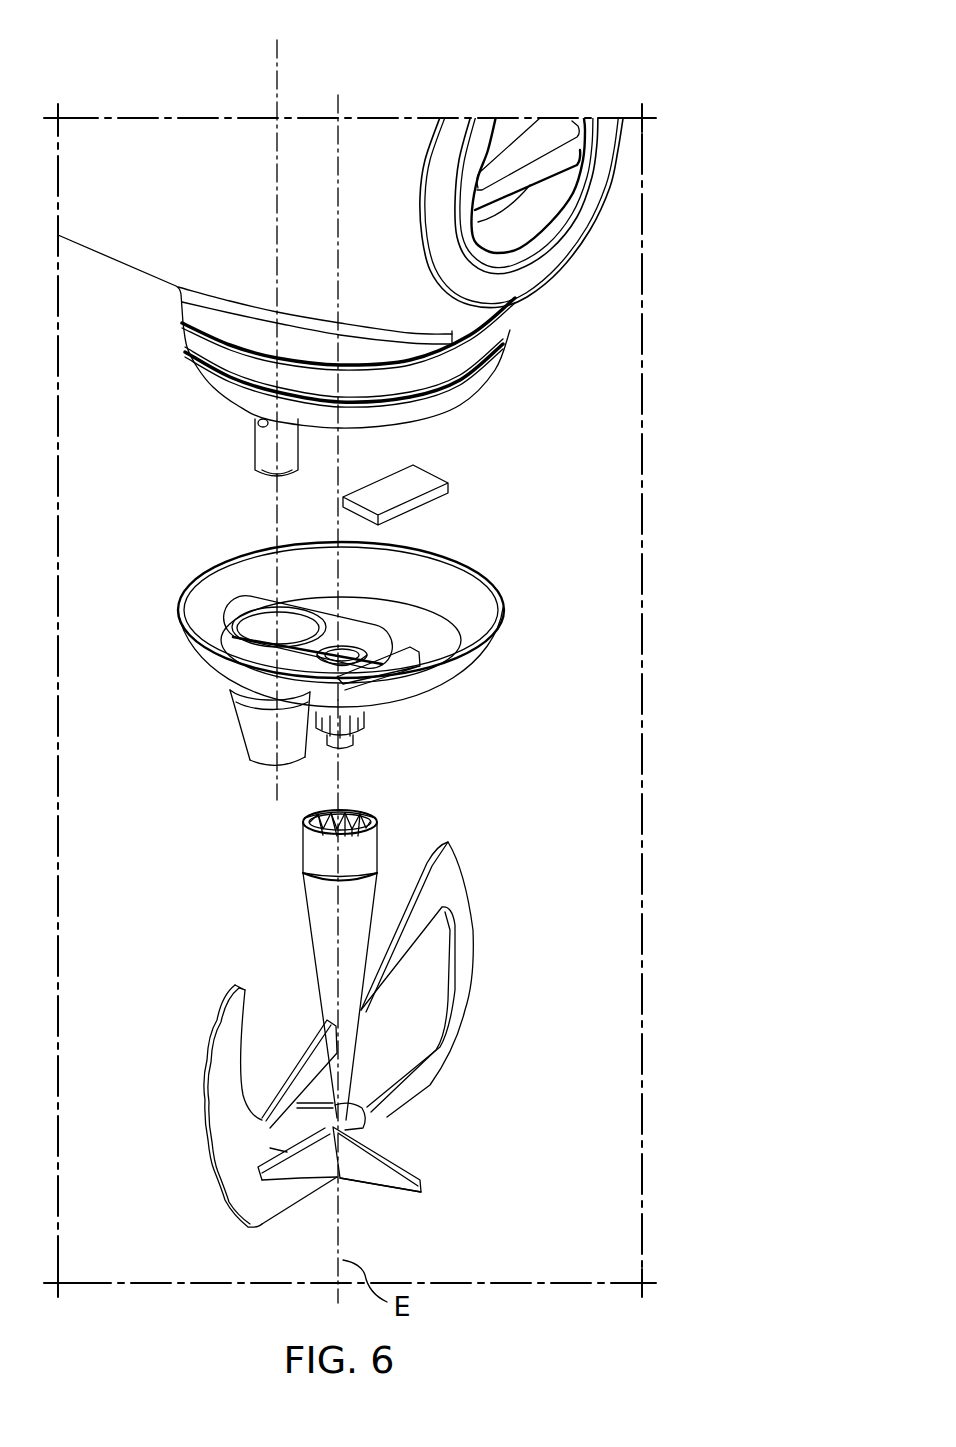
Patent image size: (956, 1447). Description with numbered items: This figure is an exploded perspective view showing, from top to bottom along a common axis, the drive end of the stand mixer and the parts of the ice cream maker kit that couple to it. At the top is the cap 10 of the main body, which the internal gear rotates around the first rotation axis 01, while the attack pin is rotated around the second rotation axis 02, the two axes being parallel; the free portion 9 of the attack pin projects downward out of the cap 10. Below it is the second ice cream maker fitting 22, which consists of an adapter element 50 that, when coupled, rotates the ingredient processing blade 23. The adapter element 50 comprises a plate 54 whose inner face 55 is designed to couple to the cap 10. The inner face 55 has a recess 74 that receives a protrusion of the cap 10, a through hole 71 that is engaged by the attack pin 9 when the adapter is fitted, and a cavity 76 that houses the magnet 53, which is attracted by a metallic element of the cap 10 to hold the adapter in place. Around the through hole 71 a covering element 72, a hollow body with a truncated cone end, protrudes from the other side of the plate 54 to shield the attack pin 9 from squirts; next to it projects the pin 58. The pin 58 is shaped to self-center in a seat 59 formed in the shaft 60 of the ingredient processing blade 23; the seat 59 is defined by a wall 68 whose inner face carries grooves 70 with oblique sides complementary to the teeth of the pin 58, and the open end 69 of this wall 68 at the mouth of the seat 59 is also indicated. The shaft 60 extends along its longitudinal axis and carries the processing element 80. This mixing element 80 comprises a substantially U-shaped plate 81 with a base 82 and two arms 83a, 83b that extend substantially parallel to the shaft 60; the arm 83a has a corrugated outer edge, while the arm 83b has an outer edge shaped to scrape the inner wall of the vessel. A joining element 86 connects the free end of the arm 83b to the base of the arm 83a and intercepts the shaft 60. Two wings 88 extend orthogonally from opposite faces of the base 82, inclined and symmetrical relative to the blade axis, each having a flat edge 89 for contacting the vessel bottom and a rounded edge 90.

The second rotation axis 02 is at (279, 50).
The first rotation axis 01 is at (340, 97).
The cap 10 is at (450, 397).
The free portion of the attack pin 9 is at (258, 446).
The magnet 53 is at (420, 475).
The second ice cream maker fitting 22 is at (423, 629).
The plate 54 is at (503, 633).
The adapter element 50 is at (472, 667).
The inner face 55 is at (401, 627).
The recess 74 is at (288, 603).
The through hole 71 is at (258, 623).
The cavity 76 is at (418, 660).
The covering element 72 is at (258, 720).
The pin 58 is at (382, 743).
The ingredient processing blade 23 is at (415, 937).
The shaft 60 is at (323, 867).
The wall 68 is at (303, 820).
The upper rim of the coupling sleeve 69 is at (320, 812).
The grooves 70 is at (350, 838).
The seat 59 is at (352, 810).
The processing element 80 is at (365, 1048).
The U-shaped plate 81 is at (370, 1122).
The arm 83a is at (222, 1120).
The arm 83b is at (463, 908).
The joining element 86 is at (400, 943).
The wings 88 is at (308, 1123).
The flat edge 89 is at (362, 1183).
The rounded edge 90 is at (328, 1092).
The base 82 is at (292, 1190).